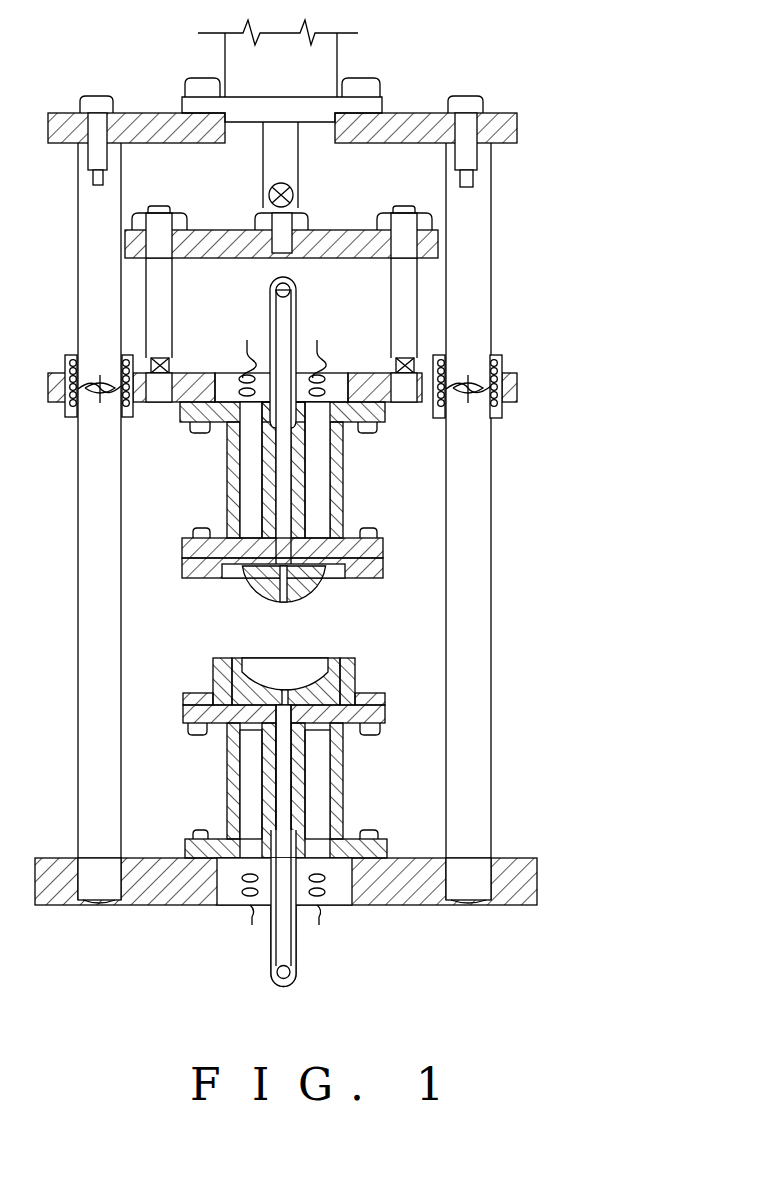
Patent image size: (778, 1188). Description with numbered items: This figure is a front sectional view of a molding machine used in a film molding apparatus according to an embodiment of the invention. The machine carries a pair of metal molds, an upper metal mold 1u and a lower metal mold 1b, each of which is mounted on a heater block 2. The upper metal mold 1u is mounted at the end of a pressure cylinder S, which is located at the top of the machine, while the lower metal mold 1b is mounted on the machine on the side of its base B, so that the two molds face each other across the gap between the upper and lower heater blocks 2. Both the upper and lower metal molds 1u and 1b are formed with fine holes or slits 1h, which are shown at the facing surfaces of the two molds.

The pressure cylinder S is at (337, 57).
The heater block 2 is at (343, 485).
The upper metal mold 1u is at (383, 565).
The lower metal mold 1b is at (355, 673).
The fine holes or slits 1h is at (233, 660).
The base B is at (537, 865).